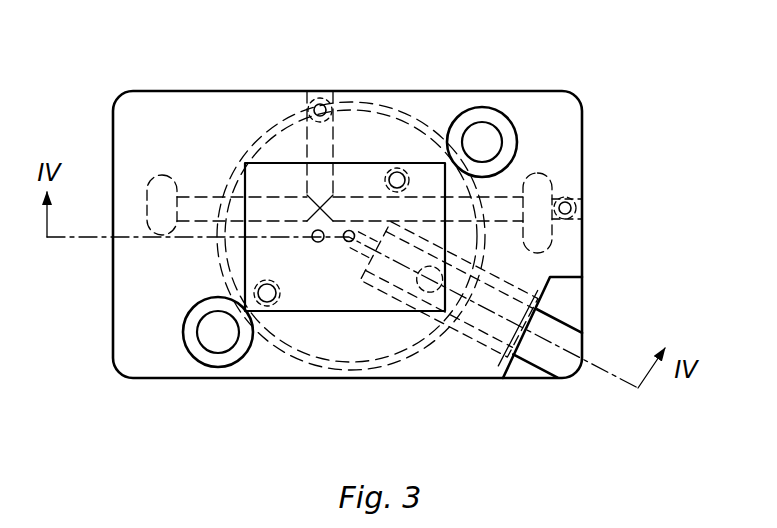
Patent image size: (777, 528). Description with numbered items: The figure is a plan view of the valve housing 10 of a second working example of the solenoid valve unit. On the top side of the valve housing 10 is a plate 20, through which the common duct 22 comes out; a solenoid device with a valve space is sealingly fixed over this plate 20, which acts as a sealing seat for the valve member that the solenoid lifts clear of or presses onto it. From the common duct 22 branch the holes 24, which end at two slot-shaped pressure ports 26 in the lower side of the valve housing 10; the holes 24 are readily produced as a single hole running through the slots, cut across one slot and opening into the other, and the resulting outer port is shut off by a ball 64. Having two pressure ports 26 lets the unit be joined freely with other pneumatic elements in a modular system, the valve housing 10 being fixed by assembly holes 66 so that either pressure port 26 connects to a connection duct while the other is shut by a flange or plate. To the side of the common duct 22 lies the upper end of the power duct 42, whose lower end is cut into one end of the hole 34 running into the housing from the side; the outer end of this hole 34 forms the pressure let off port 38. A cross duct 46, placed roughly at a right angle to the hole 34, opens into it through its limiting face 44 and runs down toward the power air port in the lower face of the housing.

The valve housing 10 is at (473, 87).
The plate 20 is at (372, 140).
The common duct 22 is at (318, 243).
The holes 24 is at (205, 207).
The pressure port 26 is at (158, 193).
The hole 34 is at (494, 301).
The pressure let off port 38 is at (546, 295).
The power duct 42 is at (349, 243).
The limiting face 44 is at (435, 285).
The cross duct 46 is at (432, 292).
The ball 64 is at (573, 207).
The assembly holes 66 is at (485, 147).